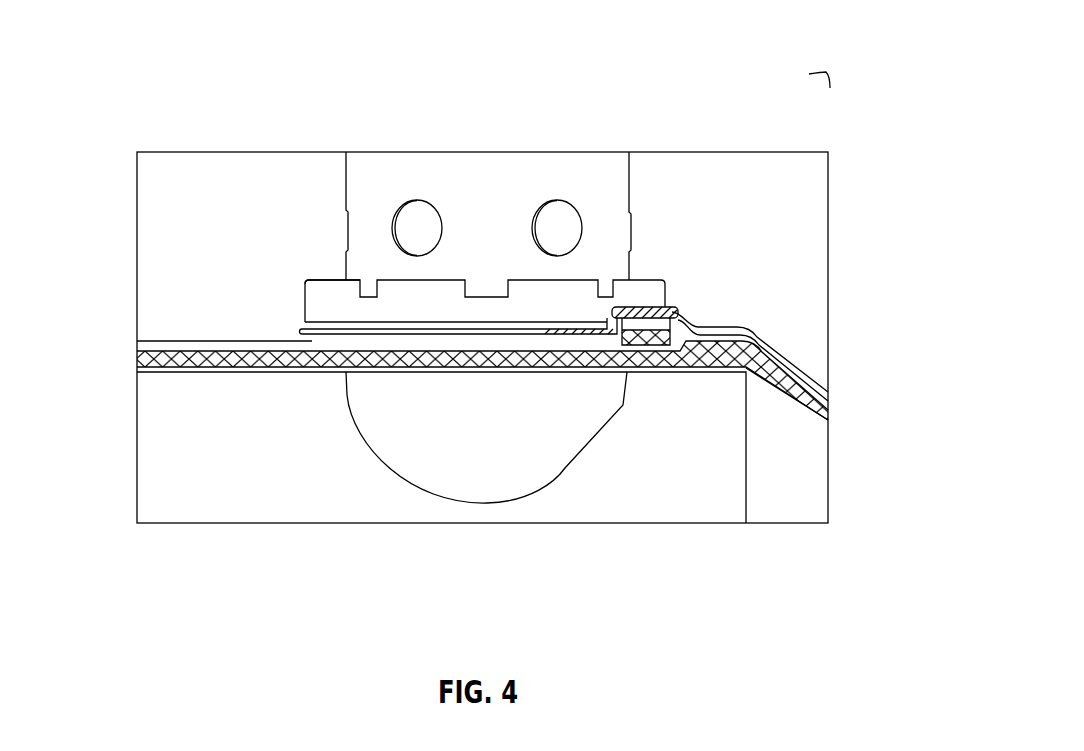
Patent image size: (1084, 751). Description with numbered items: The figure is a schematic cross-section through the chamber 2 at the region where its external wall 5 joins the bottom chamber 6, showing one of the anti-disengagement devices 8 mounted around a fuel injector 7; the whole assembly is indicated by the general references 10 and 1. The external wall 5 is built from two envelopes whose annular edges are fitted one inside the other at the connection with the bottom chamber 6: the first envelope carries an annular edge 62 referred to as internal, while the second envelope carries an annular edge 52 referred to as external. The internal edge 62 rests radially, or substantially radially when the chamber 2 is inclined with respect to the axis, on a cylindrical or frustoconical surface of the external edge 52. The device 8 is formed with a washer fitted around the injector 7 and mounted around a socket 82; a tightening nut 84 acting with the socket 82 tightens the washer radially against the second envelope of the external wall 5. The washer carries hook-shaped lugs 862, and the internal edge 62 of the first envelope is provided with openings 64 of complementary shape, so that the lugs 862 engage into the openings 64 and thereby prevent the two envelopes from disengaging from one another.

The electronic device 10 is at (835, 60).
The housing assembly 1 is at (768, 110).
The chamber 2 is at (636, 485).
The external wall 5 is at (170, 360).
The bottom chamber 6 is at (825, 403).
The fuel injector 7 is at (388, 478).
The anti-disengagement device 8 is at (268, 312).
The socket 82 is at (300, 333).
The tightening nut 84 is at (327, 302).
The lug 862 is at (641, 308).
The external annular edge 52 is at (752, 358).
The internal annular edge 62 is at (735, 333).
The opening 64 is at (693, 310).